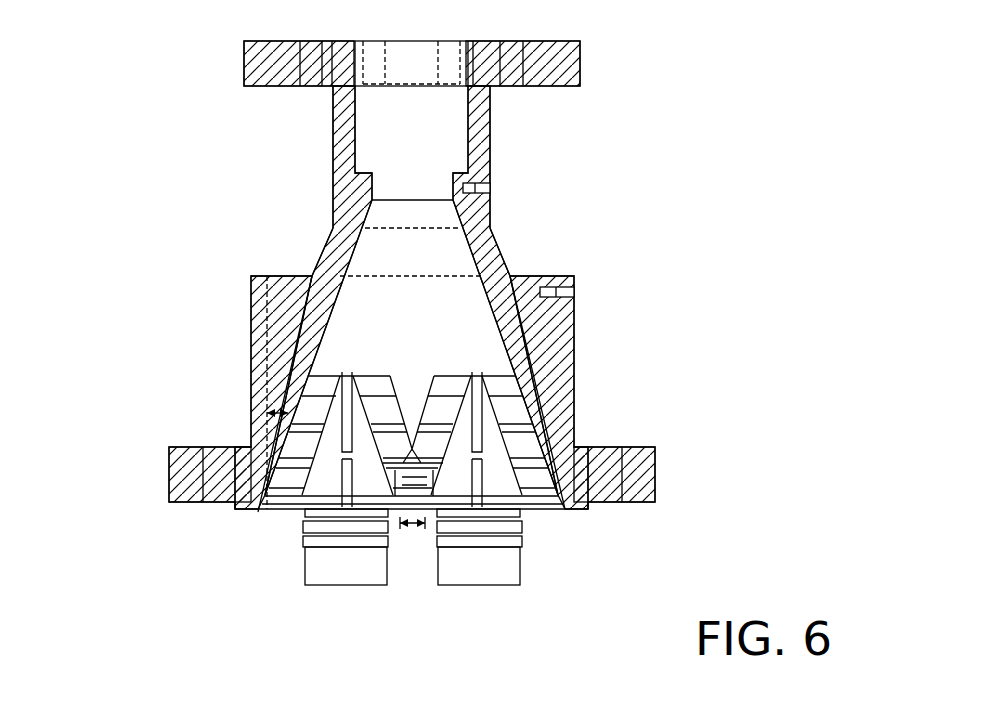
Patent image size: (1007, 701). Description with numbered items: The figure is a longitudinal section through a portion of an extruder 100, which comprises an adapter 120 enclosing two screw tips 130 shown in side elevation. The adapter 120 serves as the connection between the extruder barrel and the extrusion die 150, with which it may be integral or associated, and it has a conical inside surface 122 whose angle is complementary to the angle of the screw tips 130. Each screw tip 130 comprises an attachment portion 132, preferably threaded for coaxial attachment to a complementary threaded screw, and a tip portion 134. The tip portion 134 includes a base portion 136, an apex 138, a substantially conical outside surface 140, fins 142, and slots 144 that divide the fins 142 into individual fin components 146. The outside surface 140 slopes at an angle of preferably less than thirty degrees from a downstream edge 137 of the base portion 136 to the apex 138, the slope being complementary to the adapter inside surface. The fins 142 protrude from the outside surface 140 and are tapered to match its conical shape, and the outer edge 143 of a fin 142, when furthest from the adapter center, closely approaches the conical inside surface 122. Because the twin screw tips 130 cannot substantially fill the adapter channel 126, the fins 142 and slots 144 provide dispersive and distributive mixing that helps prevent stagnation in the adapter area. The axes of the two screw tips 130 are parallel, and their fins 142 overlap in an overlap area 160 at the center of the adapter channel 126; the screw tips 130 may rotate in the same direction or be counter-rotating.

The extruder 100 is at (111, 67).
The extrusion die 150 is at (609, 41).
The adapter 120 is at (554, 177).
The conical inside surface 122 is at (486, 326).
The adapter channel 126 is at (473, 357).
The screw tip 130 is at (281, 536).
The attachment portion 132 is at (508, 565).
The tip portion 134 is at (437, 382).
The base portion 136 is at (540, 498).
The downstream edge 137 is at (540, 484).
The apex 138 is at (342, 372).
The outside surface 140 is at (337, 440).
The fins 142 is at (515, 410).
The outer edge 143 is at (527, 377).
The slots 144 is at (523, 430).
The fin components 146 is at (310, 408).
The overlap area 160 is at (415, 529).